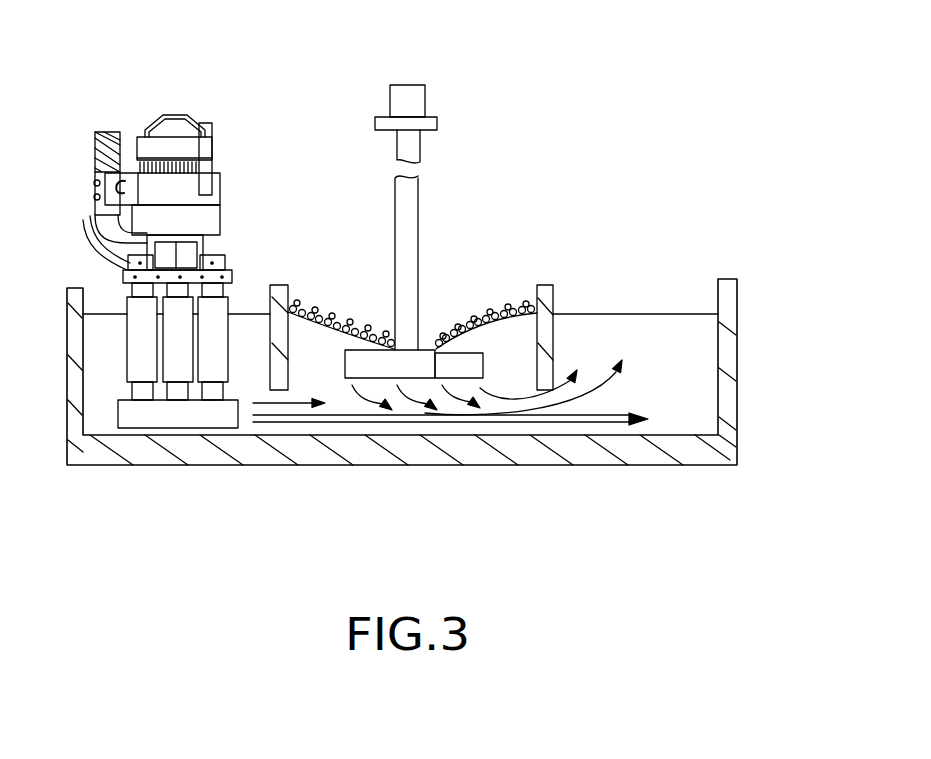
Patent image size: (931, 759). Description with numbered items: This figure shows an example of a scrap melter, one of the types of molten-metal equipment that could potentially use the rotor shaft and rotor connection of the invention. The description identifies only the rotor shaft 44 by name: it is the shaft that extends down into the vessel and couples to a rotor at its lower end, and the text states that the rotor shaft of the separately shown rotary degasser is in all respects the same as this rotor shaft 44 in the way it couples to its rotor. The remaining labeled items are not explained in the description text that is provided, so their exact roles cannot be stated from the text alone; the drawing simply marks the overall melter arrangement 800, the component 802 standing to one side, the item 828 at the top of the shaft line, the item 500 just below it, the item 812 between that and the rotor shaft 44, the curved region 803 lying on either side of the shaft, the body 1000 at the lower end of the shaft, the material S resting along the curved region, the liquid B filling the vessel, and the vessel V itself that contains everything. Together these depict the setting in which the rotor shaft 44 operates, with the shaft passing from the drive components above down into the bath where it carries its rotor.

The pump 802 is at (190, 92).
The motor 828 is at (426, 94).
The mounting flange 500 is at (375, 121).
The drive shaft 812 is at (432, 143).
The separation system 800 is at (492, 210).
The screen 803 is at (480, 268).
The rotor shaft 44 is at (395, 237).
The hub 1000 is at (473, 364).
The solids S is at (330, 302).
The bath liquid B is at (116, 350).
The vessel V is at (737, 335).